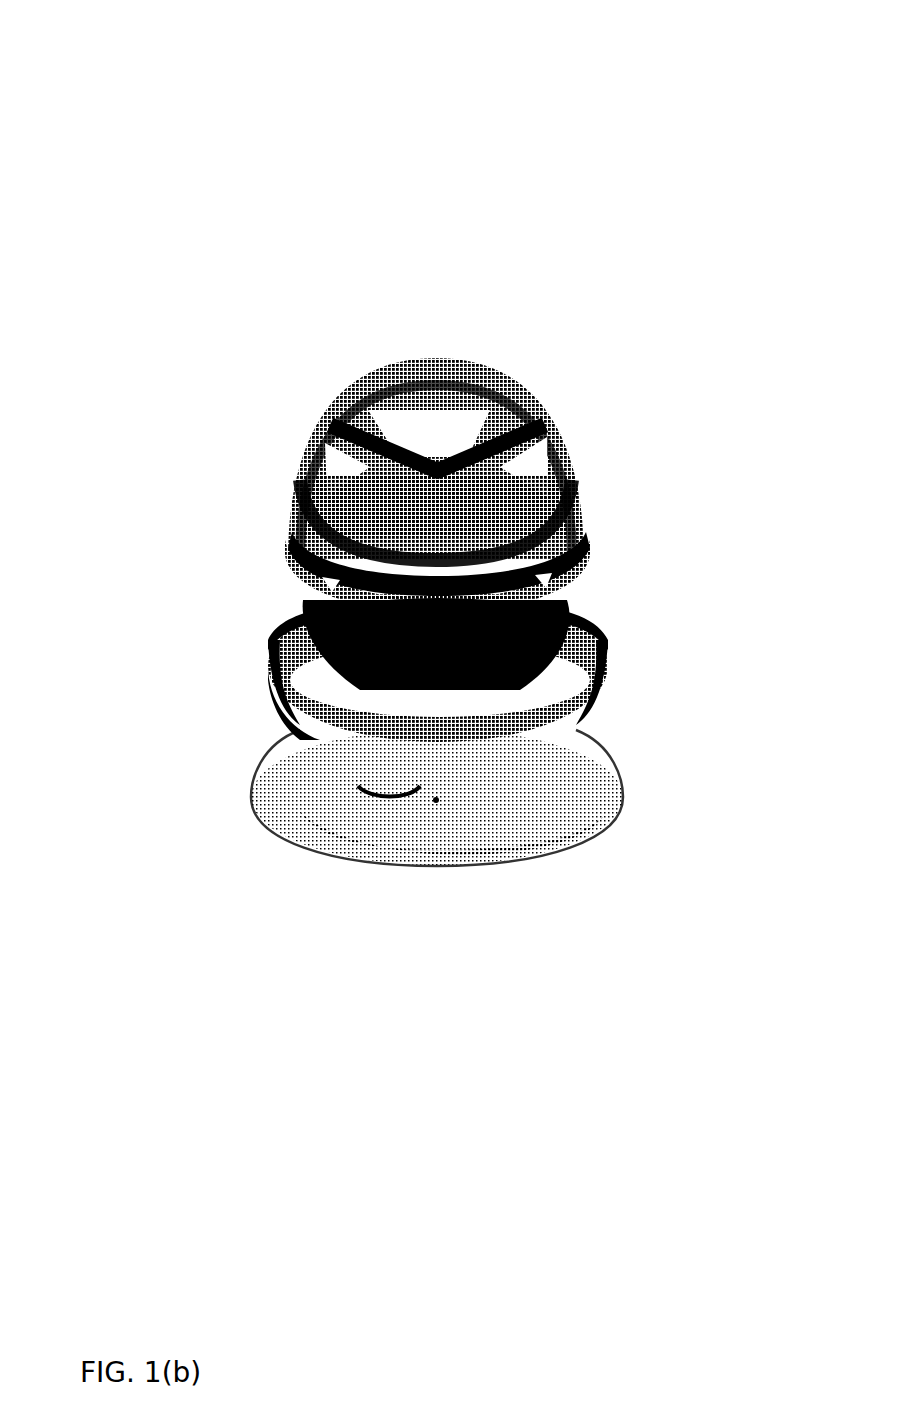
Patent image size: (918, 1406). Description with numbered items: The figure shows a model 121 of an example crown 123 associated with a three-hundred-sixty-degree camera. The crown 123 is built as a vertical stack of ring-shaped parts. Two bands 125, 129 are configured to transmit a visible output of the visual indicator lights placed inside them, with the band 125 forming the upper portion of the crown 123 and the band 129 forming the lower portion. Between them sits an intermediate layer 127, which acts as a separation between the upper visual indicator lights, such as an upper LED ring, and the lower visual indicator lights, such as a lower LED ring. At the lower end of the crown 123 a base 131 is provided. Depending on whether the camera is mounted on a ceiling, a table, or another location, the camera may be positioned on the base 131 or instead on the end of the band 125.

The model of crown 121 is at (76, 40).
The crown 123 is at (331, 352).
The band 125 is at (590, 450).
The intermediate layer 127 is at (590, 550).
The band 129 is at (607, 652).
The base 131 is at (608, 797).